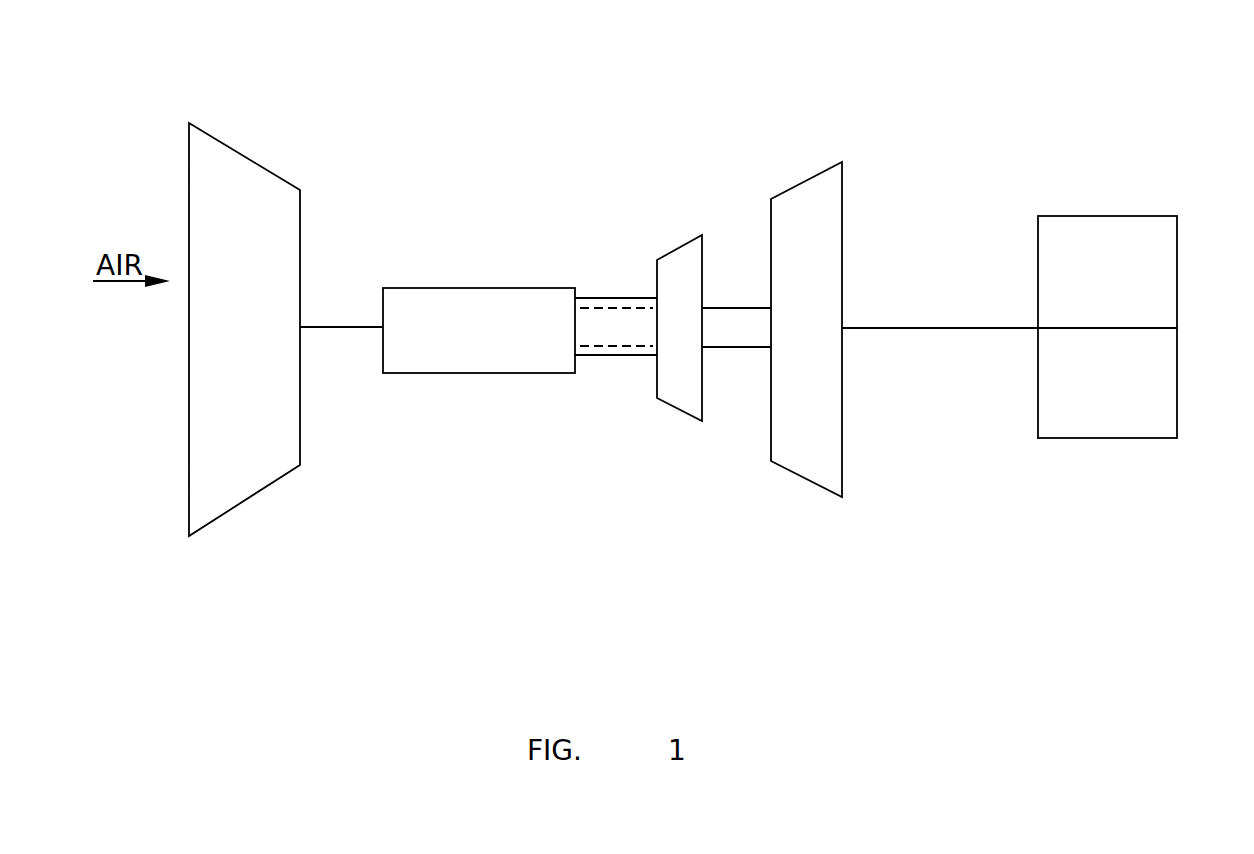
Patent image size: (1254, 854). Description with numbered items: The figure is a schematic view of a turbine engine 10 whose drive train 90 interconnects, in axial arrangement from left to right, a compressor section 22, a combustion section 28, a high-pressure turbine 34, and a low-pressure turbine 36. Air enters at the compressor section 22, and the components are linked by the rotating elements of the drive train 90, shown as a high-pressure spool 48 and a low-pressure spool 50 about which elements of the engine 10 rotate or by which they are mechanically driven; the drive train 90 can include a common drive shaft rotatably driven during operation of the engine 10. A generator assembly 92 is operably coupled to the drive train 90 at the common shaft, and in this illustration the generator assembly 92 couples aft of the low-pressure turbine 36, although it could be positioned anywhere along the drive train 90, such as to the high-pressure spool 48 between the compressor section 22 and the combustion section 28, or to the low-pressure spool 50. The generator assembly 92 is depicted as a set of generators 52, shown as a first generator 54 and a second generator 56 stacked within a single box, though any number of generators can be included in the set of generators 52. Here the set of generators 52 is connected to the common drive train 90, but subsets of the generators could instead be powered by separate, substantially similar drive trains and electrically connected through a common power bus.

The engine 10 is at (346, 57).
The compressor section 22 is at (261, 343).
The combustion section 28 is at (500, 343).
The high-pressure turbine 34 is at (695, 343).
The low-pressure turbine 36 is at (822, 337).
The high-pressure spool 48 is at (341, 326).
The low-pressure spool 50 is at (730, 347).
The set of generators 52 is at (1128, 207).
The first generator 54 is at (1122, 292).
The second generator 56 is at (1122, 402).
The drive train 90 is at (330, 343).
The generator assembly 92 is at (1031, 160).